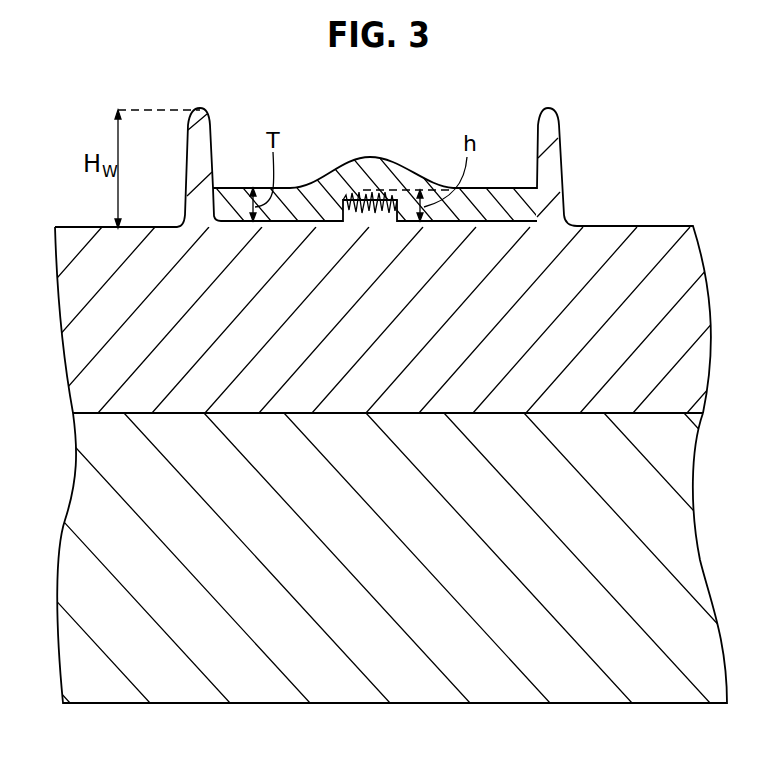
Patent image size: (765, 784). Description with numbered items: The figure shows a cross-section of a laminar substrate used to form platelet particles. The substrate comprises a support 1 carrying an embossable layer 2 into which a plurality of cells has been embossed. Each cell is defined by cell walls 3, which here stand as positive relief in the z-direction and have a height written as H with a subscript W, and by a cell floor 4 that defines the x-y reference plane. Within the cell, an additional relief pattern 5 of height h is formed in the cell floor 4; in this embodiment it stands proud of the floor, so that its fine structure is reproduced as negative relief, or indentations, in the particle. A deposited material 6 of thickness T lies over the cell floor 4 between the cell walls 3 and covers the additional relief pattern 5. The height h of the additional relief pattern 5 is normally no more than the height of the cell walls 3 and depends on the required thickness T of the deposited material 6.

The support 1 is at (357, 680).
The embossable layer 2 is at (620, 246).
The cell walls 3 is at (200, 110).
The cell floor 4 is at (236, 222).
The additional relief pattern 5 is at (367, 222).
The deposited material 6 is at (503, 197).